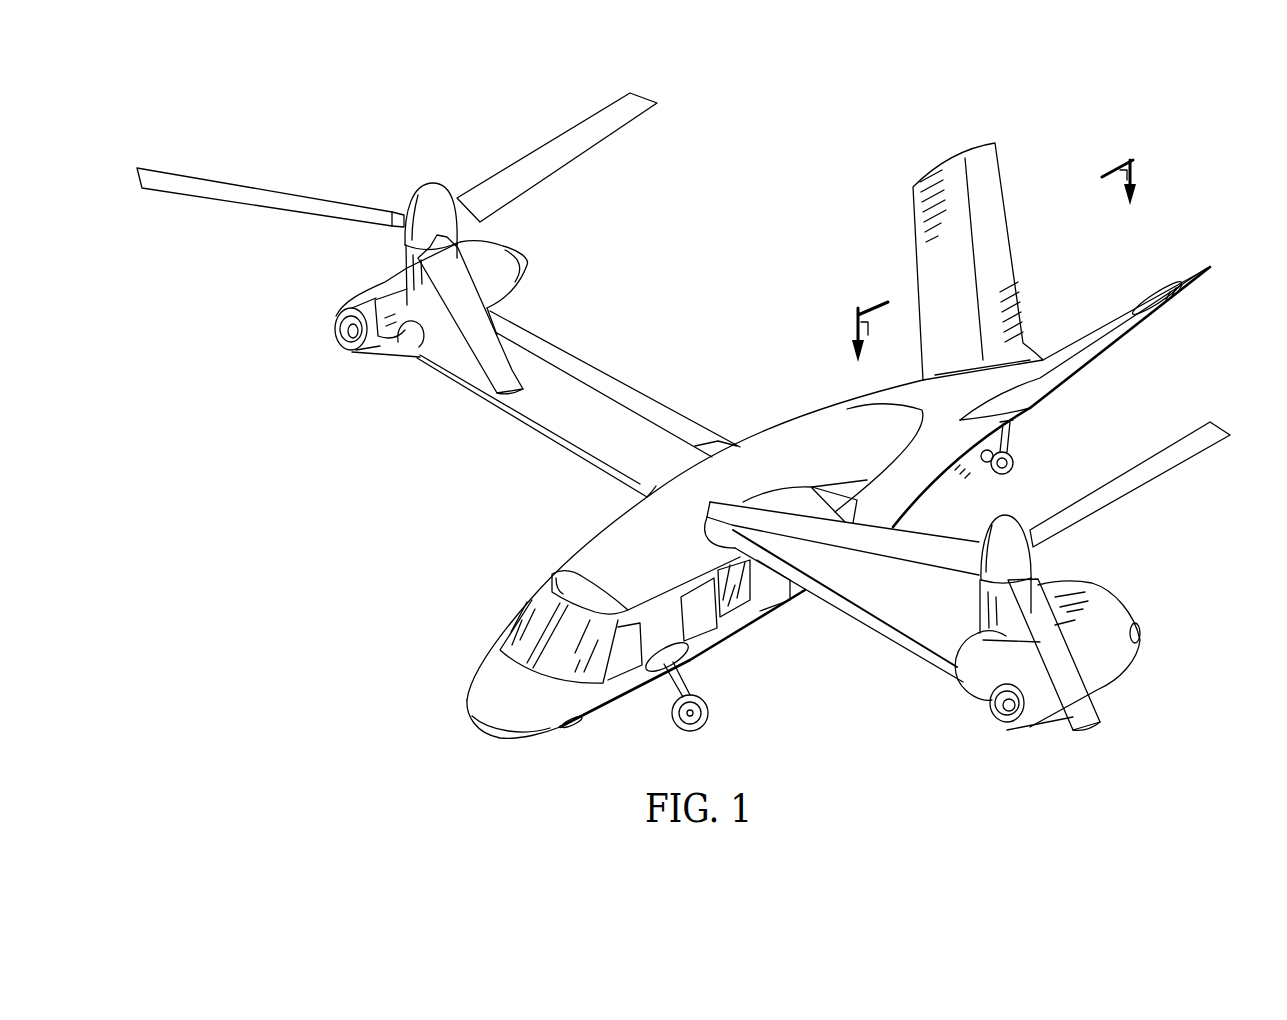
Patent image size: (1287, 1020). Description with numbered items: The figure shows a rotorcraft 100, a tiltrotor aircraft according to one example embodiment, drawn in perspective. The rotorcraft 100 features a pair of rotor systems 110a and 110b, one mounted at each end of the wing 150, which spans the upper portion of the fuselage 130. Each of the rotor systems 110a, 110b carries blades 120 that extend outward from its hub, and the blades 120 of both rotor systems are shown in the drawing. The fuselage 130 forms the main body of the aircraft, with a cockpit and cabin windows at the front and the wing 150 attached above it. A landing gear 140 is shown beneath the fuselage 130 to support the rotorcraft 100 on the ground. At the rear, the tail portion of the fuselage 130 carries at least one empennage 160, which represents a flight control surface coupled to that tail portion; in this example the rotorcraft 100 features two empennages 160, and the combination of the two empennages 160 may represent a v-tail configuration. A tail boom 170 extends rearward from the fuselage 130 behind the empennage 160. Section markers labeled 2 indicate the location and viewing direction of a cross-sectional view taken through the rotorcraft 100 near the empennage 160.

The rotorcraft 100 is at (808, 106).
The rotor system 110a is at (568, 249).
The rotor system 110b is at (1162, 668).
The blades 120 is at (550, 145).
The fuselage 130 is at (513, 740).
The landing gear 140 is at (713, 700).
The wing 150 is at (533, 430).
The empennage 160 is at (1002, 170).
The tail boom 170 is at (1100, 343).
The section line 2-2 (view of FIG. 2) 2 is at (995, 277).